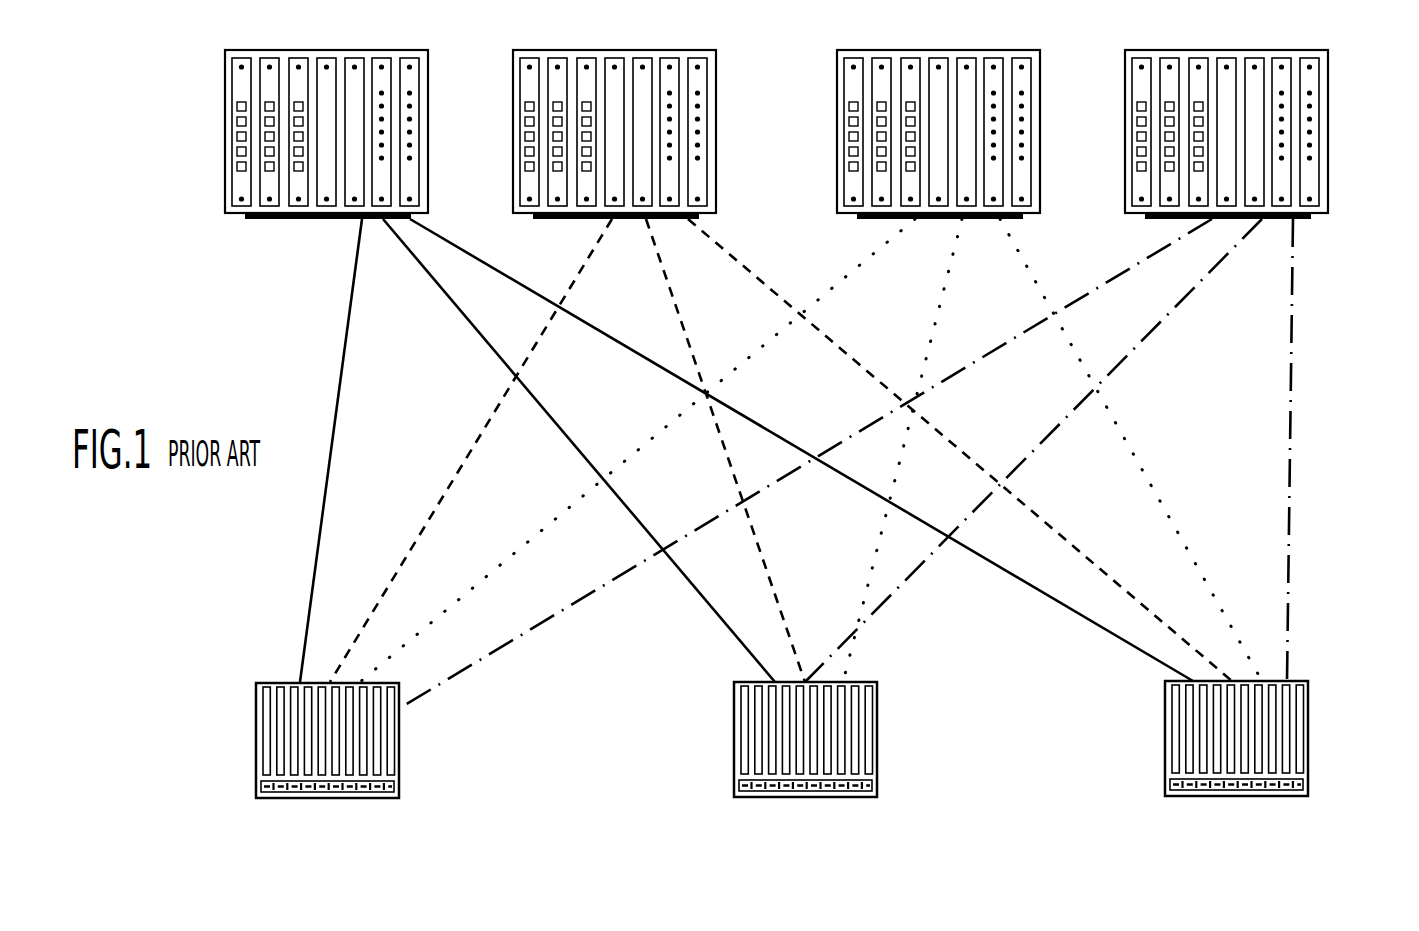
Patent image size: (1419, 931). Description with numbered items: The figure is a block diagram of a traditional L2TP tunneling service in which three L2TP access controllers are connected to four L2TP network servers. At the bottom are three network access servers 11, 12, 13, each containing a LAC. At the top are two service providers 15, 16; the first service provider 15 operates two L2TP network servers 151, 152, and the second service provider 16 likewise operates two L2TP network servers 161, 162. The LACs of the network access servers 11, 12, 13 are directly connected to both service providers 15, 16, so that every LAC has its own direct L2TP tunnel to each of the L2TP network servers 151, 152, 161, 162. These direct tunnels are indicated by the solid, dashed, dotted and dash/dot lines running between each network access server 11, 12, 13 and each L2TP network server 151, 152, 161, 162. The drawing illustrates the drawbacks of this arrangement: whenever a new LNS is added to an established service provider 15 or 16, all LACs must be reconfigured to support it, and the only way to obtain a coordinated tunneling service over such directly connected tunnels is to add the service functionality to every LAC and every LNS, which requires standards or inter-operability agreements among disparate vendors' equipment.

The network access server 11 is at (400, 741).
The network access server 12 is at (877, 743).
The network access server 13 is at (1307, 748).
The service provider 15 is at (513, 40).
The L2TP network server 151 is at (242, 222).
The L2TP network server 152 is at (530, 222).
The service provider 16 is at (1038, 40).
The L2TP network server 161 is at (854, 222).
The L2TP network server 162 is at (1142, 222).